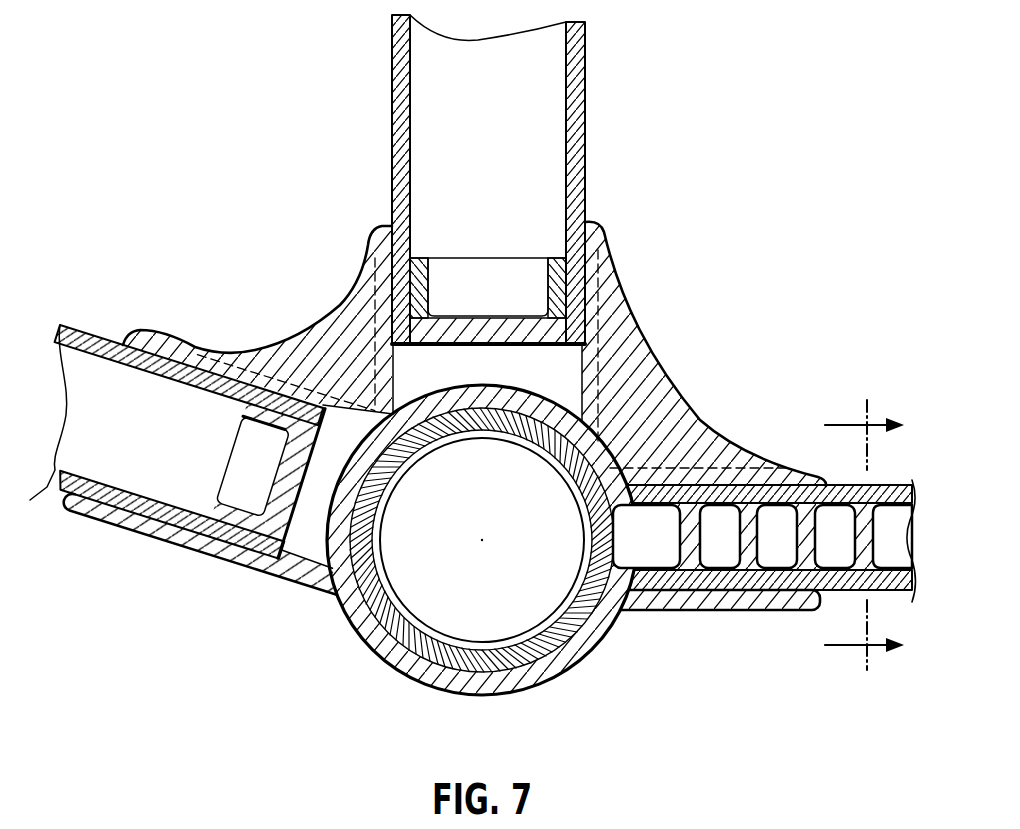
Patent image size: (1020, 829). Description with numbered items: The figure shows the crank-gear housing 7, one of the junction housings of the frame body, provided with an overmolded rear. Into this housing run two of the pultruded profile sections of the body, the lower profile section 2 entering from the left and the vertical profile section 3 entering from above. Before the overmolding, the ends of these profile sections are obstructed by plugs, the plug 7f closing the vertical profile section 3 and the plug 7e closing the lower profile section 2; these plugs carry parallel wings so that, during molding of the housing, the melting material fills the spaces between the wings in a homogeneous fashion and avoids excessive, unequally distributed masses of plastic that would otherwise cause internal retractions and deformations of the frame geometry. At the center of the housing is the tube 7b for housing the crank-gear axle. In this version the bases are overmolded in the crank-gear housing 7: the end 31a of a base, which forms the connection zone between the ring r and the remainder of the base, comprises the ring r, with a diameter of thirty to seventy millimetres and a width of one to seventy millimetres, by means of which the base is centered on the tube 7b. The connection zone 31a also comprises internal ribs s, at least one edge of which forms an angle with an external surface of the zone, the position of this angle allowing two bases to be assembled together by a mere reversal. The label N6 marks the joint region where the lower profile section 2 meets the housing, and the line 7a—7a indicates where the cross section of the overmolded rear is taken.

The lower profile section 2 is at (97, 338).
The vertical profile section 3 is at (587, 88).
The crank-gear housing 7 is at (606, 300).
The section line 7a- 7a is at (862, 536).
The tube for housing the crank-gear axle 7b is at (412, 625).
The plug 7e is at (272, 528).
The plug 7f is at (553, 373).
The weld / joint of lug N6 is at (298, 352).
The internal ribs S is at (877, 483).
The end of the bases 31a is at (723, 580).
The ring r is at (510, 660).